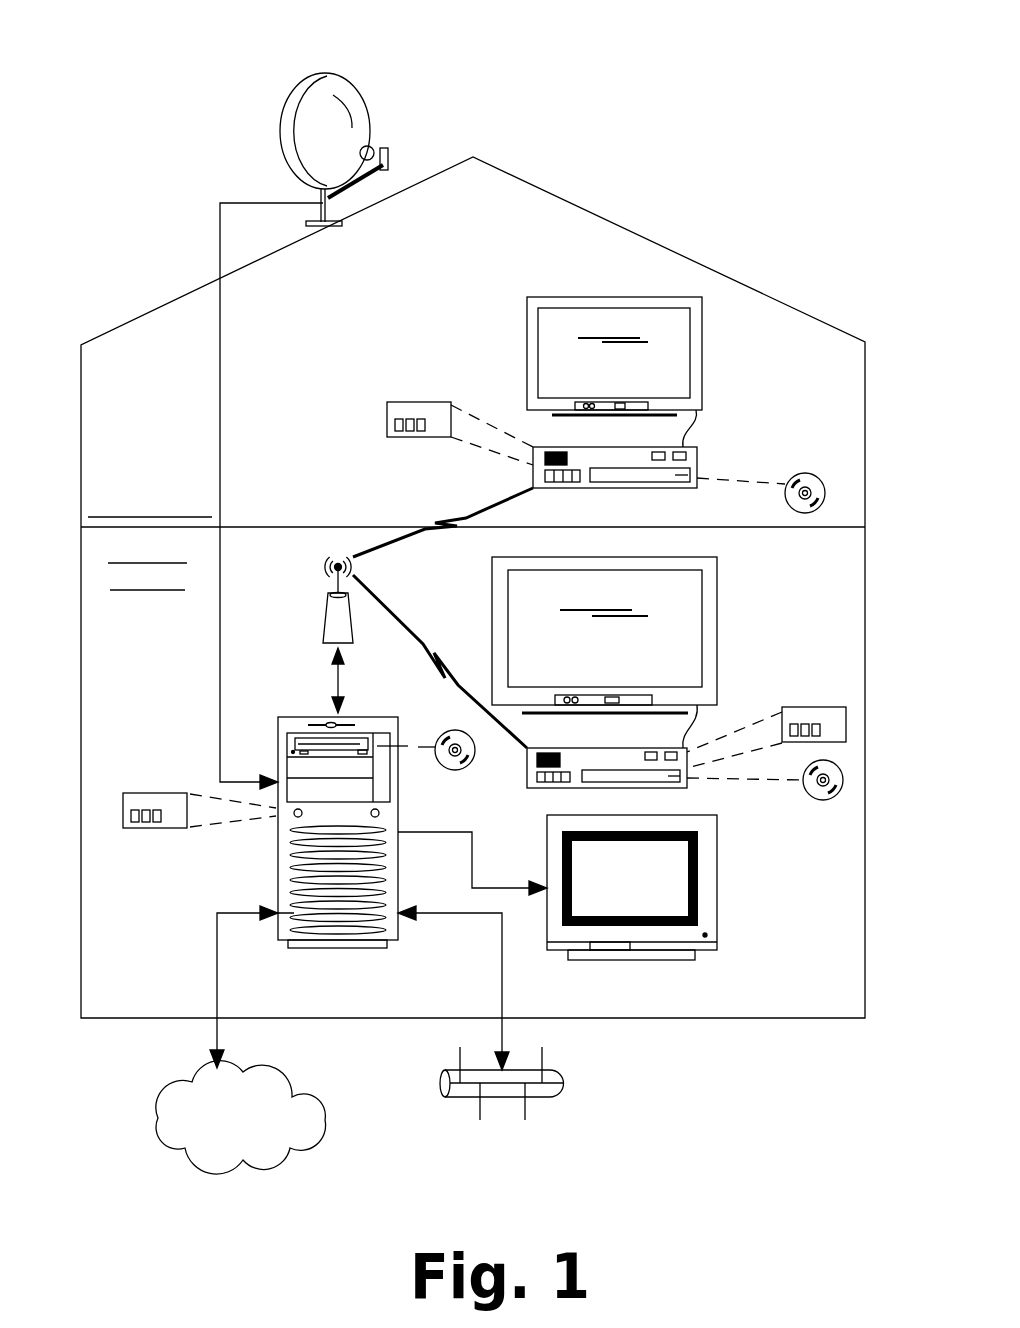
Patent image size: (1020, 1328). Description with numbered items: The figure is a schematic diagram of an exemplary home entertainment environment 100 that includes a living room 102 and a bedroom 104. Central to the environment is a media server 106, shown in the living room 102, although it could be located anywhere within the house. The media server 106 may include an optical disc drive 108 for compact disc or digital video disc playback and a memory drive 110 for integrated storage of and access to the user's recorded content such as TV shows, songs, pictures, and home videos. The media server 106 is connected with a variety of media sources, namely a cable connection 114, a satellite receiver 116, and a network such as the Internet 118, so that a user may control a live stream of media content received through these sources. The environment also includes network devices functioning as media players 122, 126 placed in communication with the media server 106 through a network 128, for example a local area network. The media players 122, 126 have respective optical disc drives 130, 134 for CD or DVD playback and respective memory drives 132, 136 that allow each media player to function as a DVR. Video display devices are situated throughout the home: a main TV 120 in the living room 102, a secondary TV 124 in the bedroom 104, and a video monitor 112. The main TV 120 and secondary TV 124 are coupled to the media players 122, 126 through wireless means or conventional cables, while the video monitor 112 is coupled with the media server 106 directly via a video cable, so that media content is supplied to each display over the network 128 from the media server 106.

The home entertainment environment 100 is at (696, 157).
The living room 102 is at (785, 1018).
The bedroom 104 is at (210, 275).
The media server 106 is at (303, 717).
The optical disc drive 108 is at (478, 768).
The memory drive 110 is at (160, 793).
The video monitor 112 is at (717, 886).
The cable connection 114 is at (563, 1083).
The satellite receiver 116 is at (308, 97).
The Internet 118 is at (158, 1118).
The main TV 120 is at (717, 636).
The media player 122 is at (555, 788).
The secondary TV 124 is at (600, 297).
The media player 126 is at (697, 468).
The network 128 is at (323, 625).
The optical disc drive 130 is at (820, 800).
The memory drive 132 is at (825, 707).
The optical disc drive 134 is at (818, 474).
The memory drive 136 is at (387, 420).